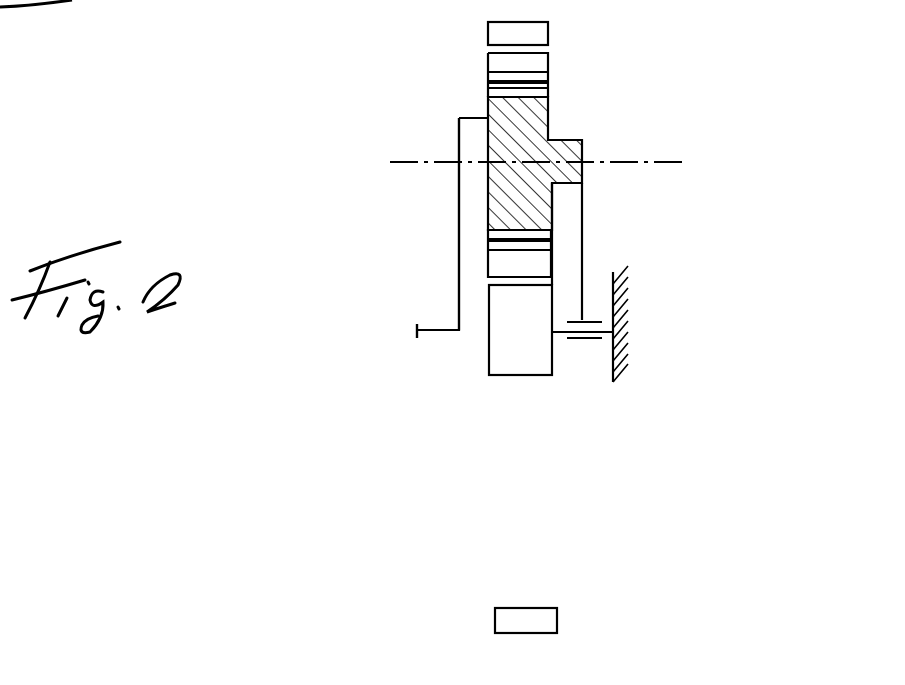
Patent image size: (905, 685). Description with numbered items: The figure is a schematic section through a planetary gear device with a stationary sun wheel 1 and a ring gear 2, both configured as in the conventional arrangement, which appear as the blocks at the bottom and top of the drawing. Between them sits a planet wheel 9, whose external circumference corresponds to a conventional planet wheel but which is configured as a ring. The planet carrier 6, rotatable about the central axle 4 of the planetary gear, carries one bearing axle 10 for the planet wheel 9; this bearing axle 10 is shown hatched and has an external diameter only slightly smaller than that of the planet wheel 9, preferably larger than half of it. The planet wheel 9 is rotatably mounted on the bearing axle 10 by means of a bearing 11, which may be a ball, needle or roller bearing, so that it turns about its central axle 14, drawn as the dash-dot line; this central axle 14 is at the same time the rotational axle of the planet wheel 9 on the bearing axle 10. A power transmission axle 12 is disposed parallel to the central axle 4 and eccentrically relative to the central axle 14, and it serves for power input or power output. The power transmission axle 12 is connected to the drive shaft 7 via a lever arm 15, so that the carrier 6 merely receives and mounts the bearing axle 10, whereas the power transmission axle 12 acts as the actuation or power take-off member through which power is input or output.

The sun wheel 1 is at (514, 355).
The ring gear 2 is at (516, 33).
The central axle 4 is at (553, 333).
The planet carrier 6 is at (582, 235).
The drive shaft 7 is at (433, 332).
The planet wheel 9 is at (517, 60).
The bearing axle 10 is at (522, 124).
The bearing 11 is at (520, 84).
The power transmission axle 12 is at (458, 117).
The central axle 14 is at (622, 164).
The lever arm 15 is at (460, 272).